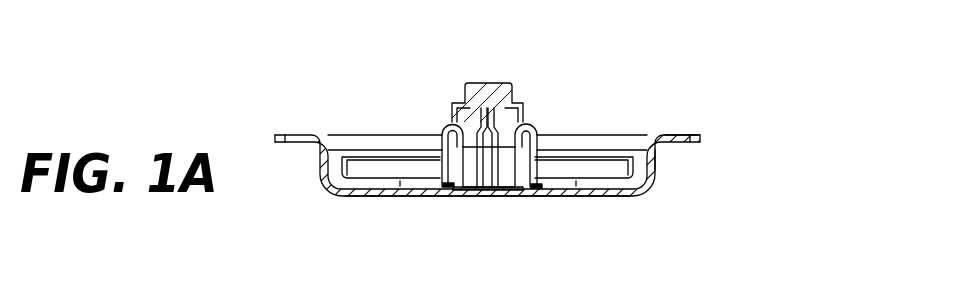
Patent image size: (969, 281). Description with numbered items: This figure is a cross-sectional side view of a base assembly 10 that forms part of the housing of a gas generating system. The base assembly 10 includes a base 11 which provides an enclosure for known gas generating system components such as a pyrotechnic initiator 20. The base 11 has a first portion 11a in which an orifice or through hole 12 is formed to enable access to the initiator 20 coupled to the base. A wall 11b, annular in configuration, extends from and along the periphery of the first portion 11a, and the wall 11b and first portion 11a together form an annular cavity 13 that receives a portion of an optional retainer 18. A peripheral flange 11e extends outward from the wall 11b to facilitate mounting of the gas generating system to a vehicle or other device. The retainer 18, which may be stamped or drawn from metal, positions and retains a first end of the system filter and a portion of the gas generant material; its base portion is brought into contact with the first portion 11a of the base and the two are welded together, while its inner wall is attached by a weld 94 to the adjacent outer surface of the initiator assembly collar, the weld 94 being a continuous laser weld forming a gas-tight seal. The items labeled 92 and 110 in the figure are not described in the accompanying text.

The base assembly 10 is at (862, 168).
The base 11 is at (497, 164).
The first portion 11a is at (587, 195).
The wall 11b is at (658, 163).
The peripheral flange 11e is at (673, 135).
The orifice or through hole 12 is at (478, 190).
The annular cavity 13 is at (592, 135).
The retainer 18 is at (370, 157).
The initiator 20 is at (452, 140).
The pin foot / solder portion 92 is at (536, 184).
The weld 94 is at (538, 160).
The cap / top portion 110 is at (465, 108).